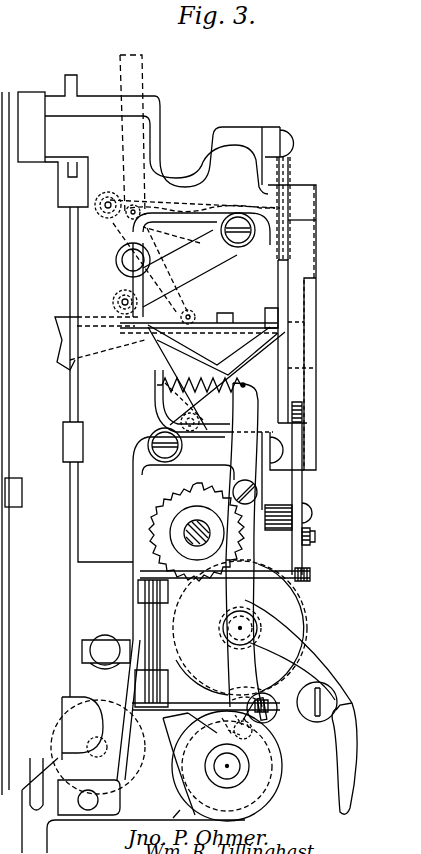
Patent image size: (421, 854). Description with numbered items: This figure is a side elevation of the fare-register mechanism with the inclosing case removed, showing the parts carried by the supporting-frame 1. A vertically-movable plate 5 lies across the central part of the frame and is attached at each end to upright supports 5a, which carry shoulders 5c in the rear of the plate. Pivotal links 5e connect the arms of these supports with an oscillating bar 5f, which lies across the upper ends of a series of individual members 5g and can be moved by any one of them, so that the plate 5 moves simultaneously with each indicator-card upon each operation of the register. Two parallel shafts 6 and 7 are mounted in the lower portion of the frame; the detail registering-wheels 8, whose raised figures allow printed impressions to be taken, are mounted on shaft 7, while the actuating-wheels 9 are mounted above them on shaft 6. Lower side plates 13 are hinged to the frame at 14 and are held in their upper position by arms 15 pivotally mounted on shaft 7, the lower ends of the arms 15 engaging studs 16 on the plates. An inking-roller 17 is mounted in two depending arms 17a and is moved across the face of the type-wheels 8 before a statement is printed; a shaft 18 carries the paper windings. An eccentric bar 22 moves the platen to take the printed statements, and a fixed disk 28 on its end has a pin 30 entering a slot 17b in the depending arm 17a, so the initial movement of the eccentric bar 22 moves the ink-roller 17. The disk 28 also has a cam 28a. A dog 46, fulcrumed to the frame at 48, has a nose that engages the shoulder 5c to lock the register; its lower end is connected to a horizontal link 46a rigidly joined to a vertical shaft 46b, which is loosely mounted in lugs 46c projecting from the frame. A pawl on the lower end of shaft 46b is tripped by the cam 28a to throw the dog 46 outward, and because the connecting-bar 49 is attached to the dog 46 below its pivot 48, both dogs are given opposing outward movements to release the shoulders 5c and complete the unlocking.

The supporting-frame 1 is at (159, 454).
The vertically-movable plate 5 is at (316, 322).
The upright supports 5a is at (286, 352).
The shoulders 5c is at (303, 418).
The pivotal links 5e is at (185, 368).
The oscillating bar 5f is at (120, 295).
The individual members 5g is at (190, 328).
The shaft 6 is at (197, 522).
The shaft 7 is at (252, 622).
The detail registering-wheels 8 is at (240, 628).
The actuating-wheels 9 is at (172, 505).
The lower side plates 13 is at (300, 785).
The hinge 14 is at (88, 803).
The arms 15 is at (330, 668).
The studs 16 is at (330, 695).
The inking-roller 17 is at (270, 710).
The depending arms 17a is at (242, 548).
The slot 17b is at (240, 706).
The shaft 18 is at (96, 748).
The eccentric bar 22 is at (228, 772).
The disk 28 is at (227, 760).
The cam 28a is at (217, 764).
The pin 30 is at (250, 734).
The dog 46 is at (302, 486).
The horizontal link 46a is at (188, 710).
The vertical shaft 46b is at (145, 615).
The lugs 46c is at (140, 588).
The pivots 48 is at (312, 512).
The connecting-bar 49 is at (315, 538).